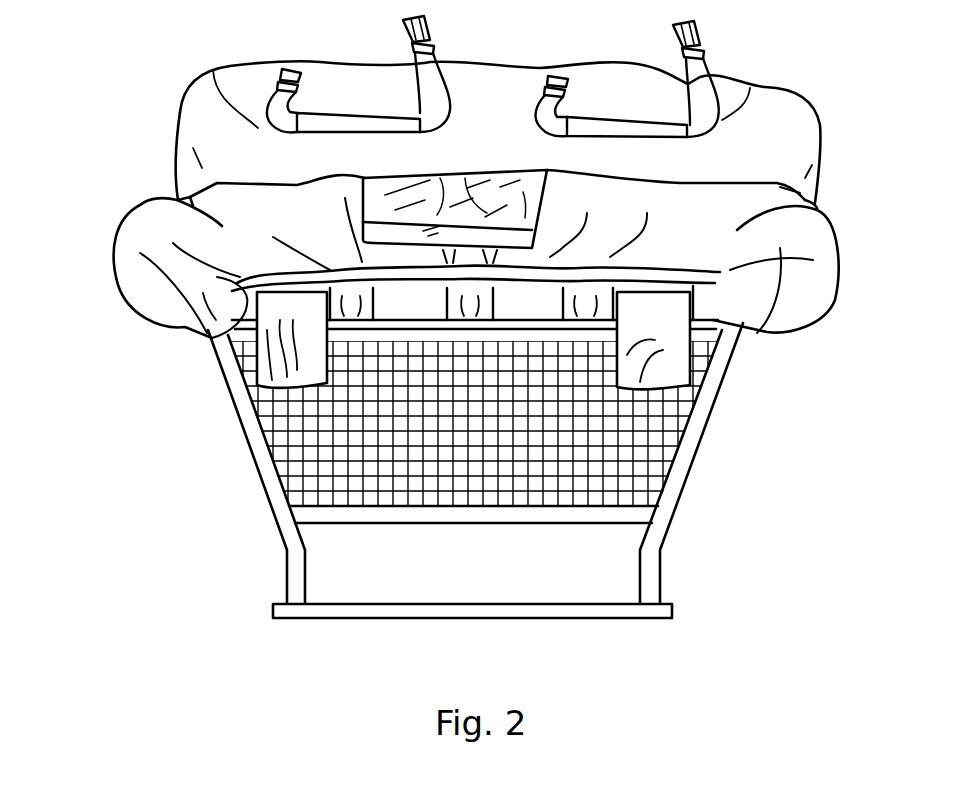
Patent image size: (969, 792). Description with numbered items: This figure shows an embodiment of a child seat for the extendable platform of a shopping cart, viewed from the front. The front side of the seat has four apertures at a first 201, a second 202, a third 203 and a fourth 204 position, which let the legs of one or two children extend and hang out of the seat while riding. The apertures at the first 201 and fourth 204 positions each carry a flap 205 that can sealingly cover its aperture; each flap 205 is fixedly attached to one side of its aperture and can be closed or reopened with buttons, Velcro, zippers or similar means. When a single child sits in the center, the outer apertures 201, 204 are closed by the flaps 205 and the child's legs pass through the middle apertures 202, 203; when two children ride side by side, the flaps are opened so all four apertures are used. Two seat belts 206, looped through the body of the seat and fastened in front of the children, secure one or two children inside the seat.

The aperture at first position 201 is at (287, 295).
The aperture at second position 202 is at (406, 302).
The aperture at third position 203 is at (530, 300).
The aperture at fourth position 204 is at (662, 293).
The flap 205 is at (278, 370).
The seat belt 206 is at (703, 65).